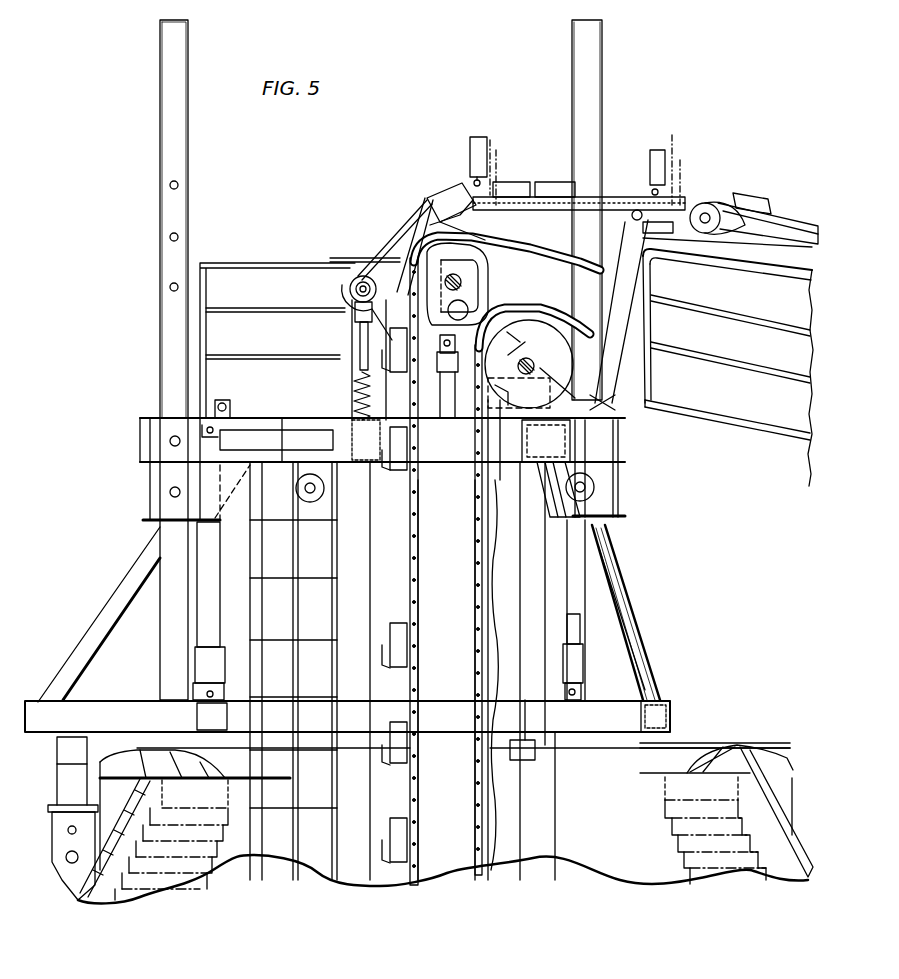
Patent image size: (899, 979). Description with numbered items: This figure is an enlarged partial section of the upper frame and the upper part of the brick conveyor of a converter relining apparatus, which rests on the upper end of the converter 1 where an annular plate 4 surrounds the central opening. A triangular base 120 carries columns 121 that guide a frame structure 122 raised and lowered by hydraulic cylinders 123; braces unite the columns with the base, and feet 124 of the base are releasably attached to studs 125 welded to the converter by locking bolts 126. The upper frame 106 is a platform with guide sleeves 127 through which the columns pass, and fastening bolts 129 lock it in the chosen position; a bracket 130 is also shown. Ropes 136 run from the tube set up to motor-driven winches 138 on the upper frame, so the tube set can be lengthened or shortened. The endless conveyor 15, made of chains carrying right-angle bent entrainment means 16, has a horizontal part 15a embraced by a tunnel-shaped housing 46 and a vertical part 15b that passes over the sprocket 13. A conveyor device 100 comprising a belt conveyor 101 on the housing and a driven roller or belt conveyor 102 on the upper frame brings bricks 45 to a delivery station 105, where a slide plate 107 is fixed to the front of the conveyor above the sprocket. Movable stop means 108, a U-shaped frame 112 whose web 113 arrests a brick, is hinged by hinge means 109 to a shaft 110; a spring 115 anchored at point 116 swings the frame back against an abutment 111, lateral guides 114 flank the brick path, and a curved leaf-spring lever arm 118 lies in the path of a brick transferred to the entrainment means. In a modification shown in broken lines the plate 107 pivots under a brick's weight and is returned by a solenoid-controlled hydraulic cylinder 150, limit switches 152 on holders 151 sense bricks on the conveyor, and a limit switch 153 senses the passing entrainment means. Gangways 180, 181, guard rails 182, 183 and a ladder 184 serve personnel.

The converter 1 is at (775, 770).
The annular plate 4 is at (698, 752).
The sprocket 13 is at (488, 282).
The conveyor 15 is at (475, 538).
The horizontal part of the conveyor 15a is at (546, 324).
The vertical part of the conveyor 15b is at (438, 598).
The entrainment means 16 is at (386, 255).
The brick 45 is at (477, 137).
The tunnel-shaped housing 46 is at (778, 412).
The conveyor device 100 is at (708, 200).
The belt conveyor 101 is at (793, 212).
The roller or belt conveyor 102 is at (625, 197).
The delivery station 105 is at (448, 194).
The upper frame 106 is at (625, 600).
The slide plate 107 is at (460, 232).
The stop means 108 is at (397, 226).
The hinge means 109 is at (351, 294).
The shaft 110 is at (354, 314).
The abutment 111 is at (358, 338).
The U-shaped frame 112 is at (422, 208).
The web 113 is at (430, 200).
The lateral guides 114 is at (362, 258).
The spring 115 is at (356, 390).
The spring connection point 116 is at (356, 410).
The curved lever arm 118 is at (356, 370).
The triangular base 120 is at (118, 700).
The column 121 is at (166, 226).
The frame structure 122 is at (100, 612).
The hydraulic cylinder 123 is at (205, 553).
The foot 124 is at (357, 753).
The stud 125 is at (58, 878).
The locking bolt 126 is at (265, 418).
The guide sleeve 127 is at (165, 493).
The fastening bolt 129 is at (170, 443).
The bracket 130 is at (226, 418).
The rope 136 is at (300, 652).
The winch 138 is at (305, 462).
The solenoid-controlled hydraulic cylinder 150 is at (512, 182).
The holder 151 is at (490, 148).
The limit switch 152 is at (488, 130).
The limit switch 153 is at (325, 270).
The gangway 180 is at (730, 422).
The gangway 181 is at (282, 418).
The guard rail 182 is at (690, 257).
The guard rail 183 is at (245, 263).
The ladder 184 is at (300, 612).